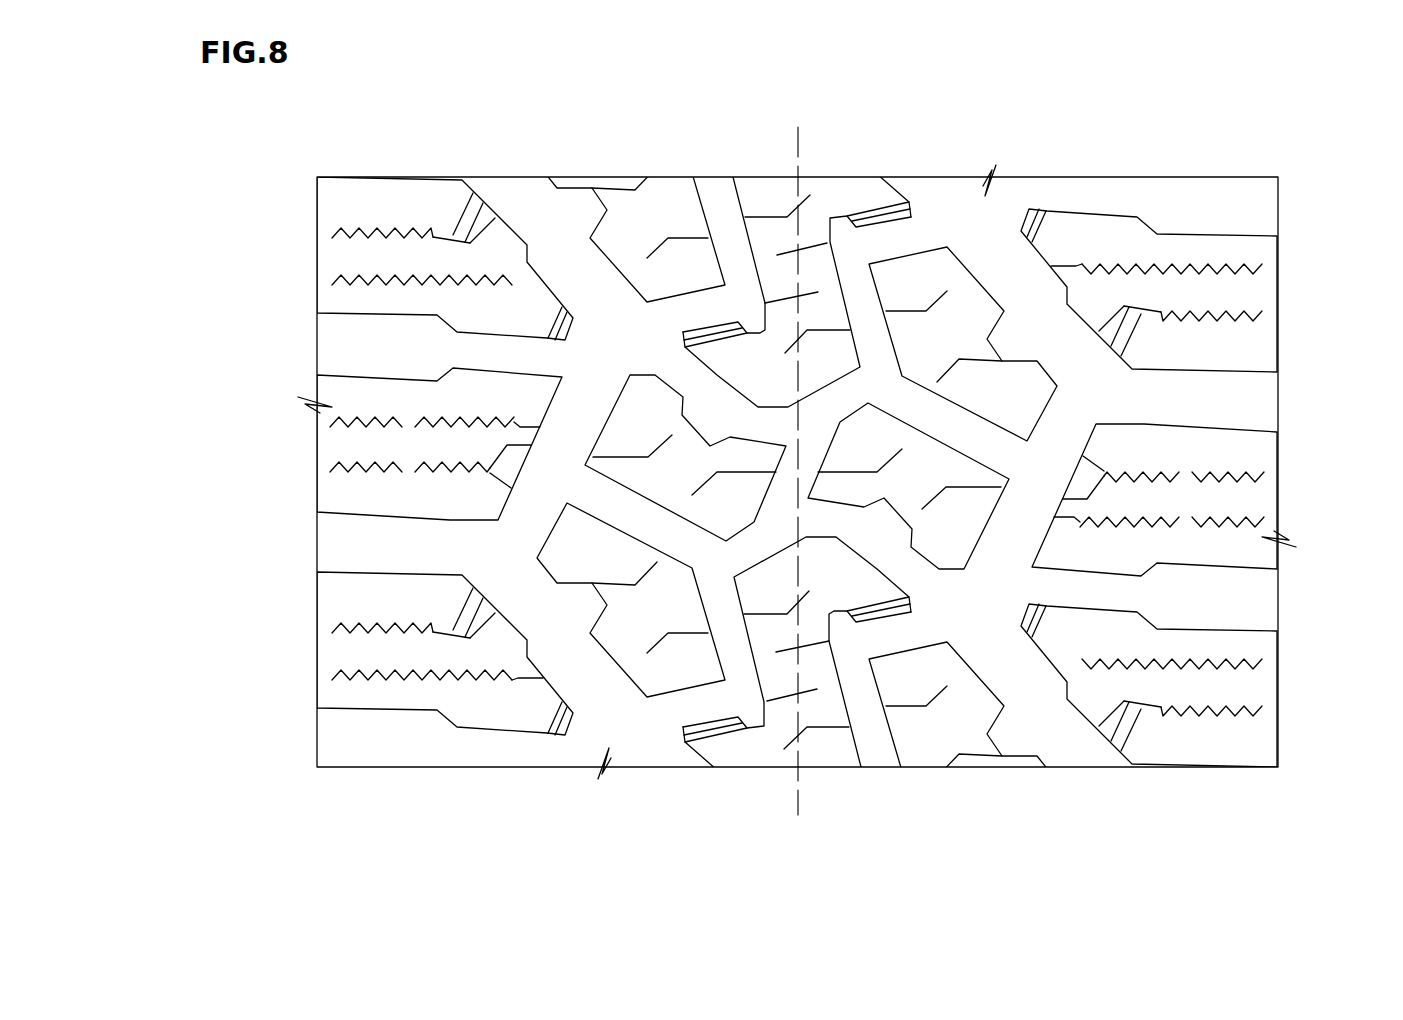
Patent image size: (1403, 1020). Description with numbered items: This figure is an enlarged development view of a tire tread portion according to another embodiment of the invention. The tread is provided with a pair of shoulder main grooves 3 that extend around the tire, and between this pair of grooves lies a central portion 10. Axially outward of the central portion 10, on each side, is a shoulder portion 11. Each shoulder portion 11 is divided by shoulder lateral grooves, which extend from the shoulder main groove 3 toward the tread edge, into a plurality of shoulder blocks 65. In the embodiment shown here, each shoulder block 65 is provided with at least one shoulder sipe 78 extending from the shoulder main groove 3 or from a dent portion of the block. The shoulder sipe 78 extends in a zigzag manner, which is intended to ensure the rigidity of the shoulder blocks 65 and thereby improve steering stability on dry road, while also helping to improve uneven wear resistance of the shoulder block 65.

The shoulder portion 11 is at (393, 207).
The shoulder main groove 3 is at (538, 213).
The central portion 10 is at (775, 243).
The shoulder block 65 is at (382, 258).
The shoulder sipe 78 is at (432, 282).